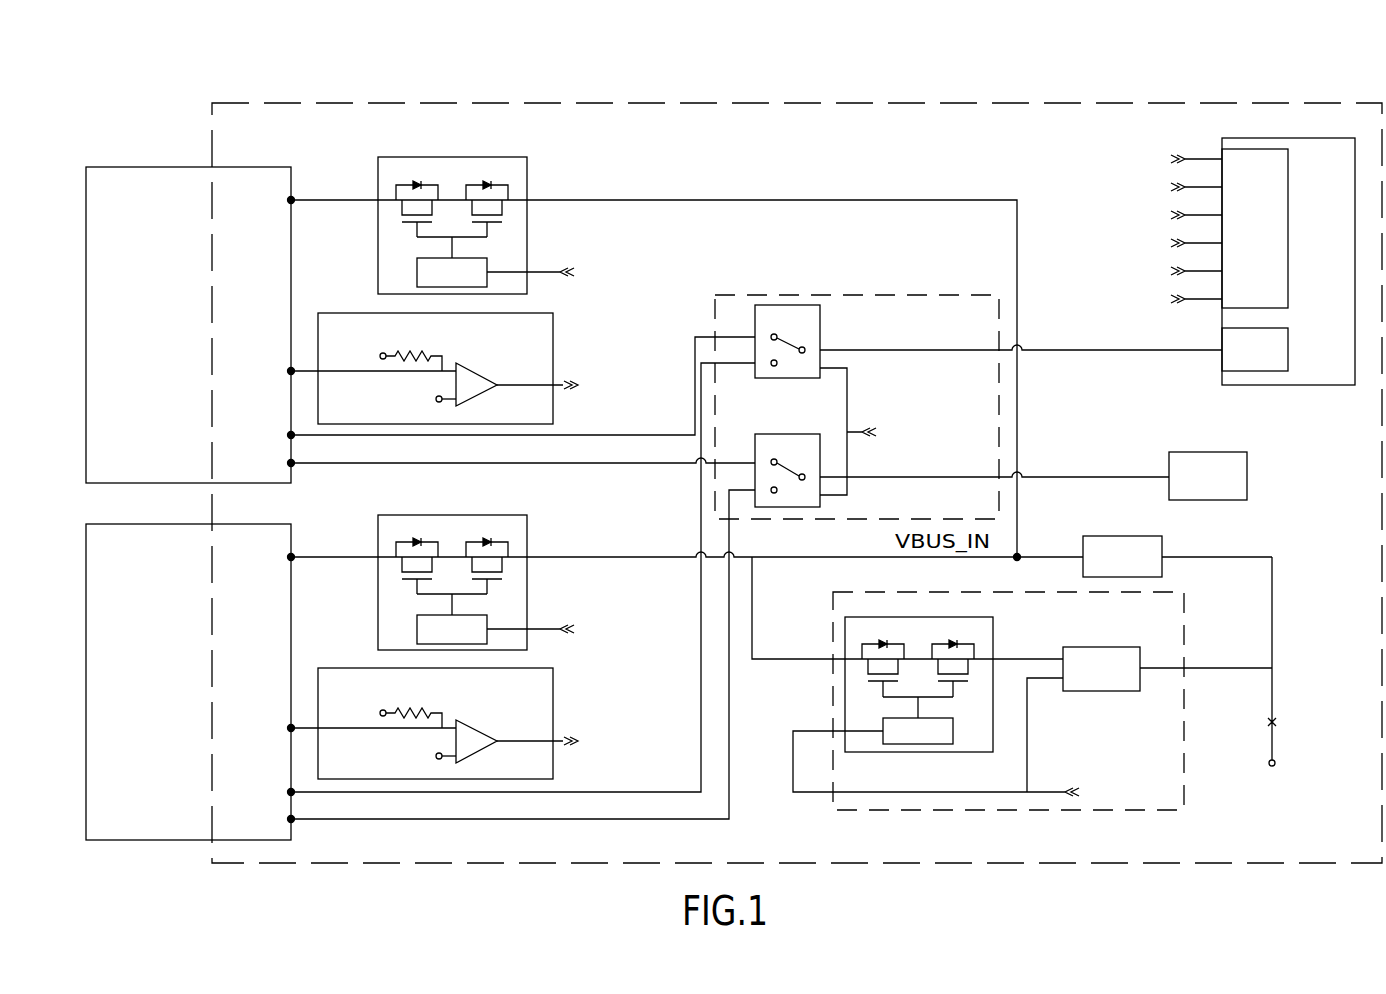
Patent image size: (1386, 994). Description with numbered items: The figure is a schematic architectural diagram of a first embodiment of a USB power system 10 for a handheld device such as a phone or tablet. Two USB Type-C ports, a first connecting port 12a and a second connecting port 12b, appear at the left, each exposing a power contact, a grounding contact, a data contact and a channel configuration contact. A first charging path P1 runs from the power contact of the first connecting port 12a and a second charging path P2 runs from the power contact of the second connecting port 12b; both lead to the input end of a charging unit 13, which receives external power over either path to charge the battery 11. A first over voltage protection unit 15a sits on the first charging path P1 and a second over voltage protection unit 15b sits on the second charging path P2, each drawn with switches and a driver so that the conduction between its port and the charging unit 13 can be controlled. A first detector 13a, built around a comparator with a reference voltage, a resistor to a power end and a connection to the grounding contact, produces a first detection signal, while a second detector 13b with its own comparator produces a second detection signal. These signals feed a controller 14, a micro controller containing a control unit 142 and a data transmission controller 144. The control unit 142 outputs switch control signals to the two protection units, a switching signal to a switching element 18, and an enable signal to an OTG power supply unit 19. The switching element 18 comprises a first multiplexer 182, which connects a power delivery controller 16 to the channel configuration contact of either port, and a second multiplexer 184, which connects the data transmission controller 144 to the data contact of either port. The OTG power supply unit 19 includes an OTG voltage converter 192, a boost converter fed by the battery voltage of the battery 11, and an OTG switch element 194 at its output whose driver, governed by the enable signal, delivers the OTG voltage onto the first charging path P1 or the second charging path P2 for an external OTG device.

The power system 10 is at (218, 86).
The battery 11 is at (1291, 715).
The first connecting port 12a is at (112, 167).
The second connecting port 12b is at (108, 842).
The charging unit 13 is at (1106, 536).
The first detector 13a is at (553, 320).
The second detector 13b is at (553, 677).
The controller 14 is at (1197, 253).
The control unit 142 is at (1252, 149).
The data transmission controller 144 is at (1220, 360).
The first over voltage protection unit 15a is at (527, 163).
The second over voltage protection unit 15b is at (527, 521).
The power delivery controller 16 is at (1190, 452).
The switching element 18 is at (857, 381).
The first multiplexer 182 is at (822, 315).
The second multiplexer 184 is at (795, 432).
The OTG power supply unit 19 is at (1016, 701).
The OTG voltage converter 192 is at (1082, 692).
The OTG switch element 194 is at (995, 626).
The first charging path P1 is at (677, 193).
The second charging path P2 is at (639, 546).